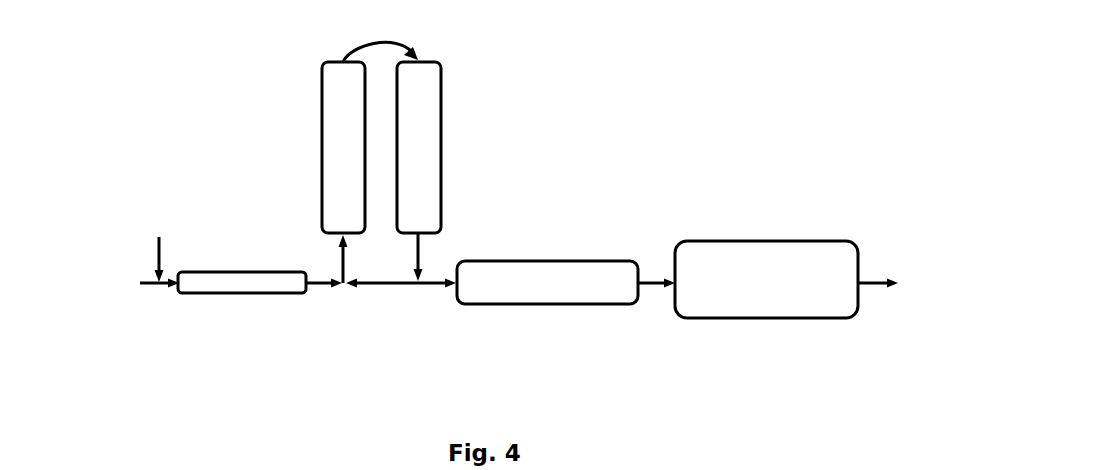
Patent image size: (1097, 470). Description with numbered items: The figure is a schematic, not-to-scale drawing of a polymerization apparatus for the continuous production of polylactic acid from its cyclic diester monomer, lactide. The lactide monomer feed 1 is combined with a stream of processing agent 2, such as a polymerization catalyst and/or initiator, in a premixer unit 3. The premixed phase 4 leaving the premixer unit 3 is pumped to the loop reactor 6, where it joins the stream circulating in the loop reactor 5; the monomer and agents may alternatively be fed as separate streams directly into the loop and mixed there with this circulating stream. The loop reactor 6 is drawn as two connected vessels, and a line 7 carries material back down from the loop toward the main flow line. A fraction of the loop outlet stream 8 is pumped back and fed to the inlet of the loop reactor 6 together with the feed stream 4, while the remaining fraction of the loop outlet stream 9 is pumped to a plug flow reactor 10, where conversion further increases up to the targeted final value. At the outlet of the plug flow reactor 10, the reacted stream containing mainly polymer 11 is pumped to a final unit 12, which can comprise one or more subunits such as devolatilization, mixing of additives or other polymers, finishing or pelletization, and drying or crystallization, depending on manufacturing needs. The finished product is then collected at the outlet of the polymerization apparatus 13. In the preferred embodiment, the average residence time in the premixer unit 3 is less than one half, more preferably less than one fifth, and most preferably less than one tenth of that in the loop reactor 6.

The lactide monomer feed 1 is at (142, 281).
The processing agent stream 2 is at (157, 242).
The premixer unit 3 is at (218, 284).
The premixed phase 4 is at (327, 285).
The stream circulating in the loop reactor 5 is at (343, 260).
The loop reactor 6 is at (408, 123).
The return line from adsorber 7 is at (423, 260).
The recycled fraction of loop outlet stream 8 is at (392, 285).
The remaining fraction of loop outlet stream 9 is at (437, 285).
The plug flow reactor 10 is at (607, 272).
The reacted stream containing mainly polymer 11 is at (650, 278).
The final unit 12 is at (778, 258).
The outlet of the polymerization apparatus 13 is at (875, 278).